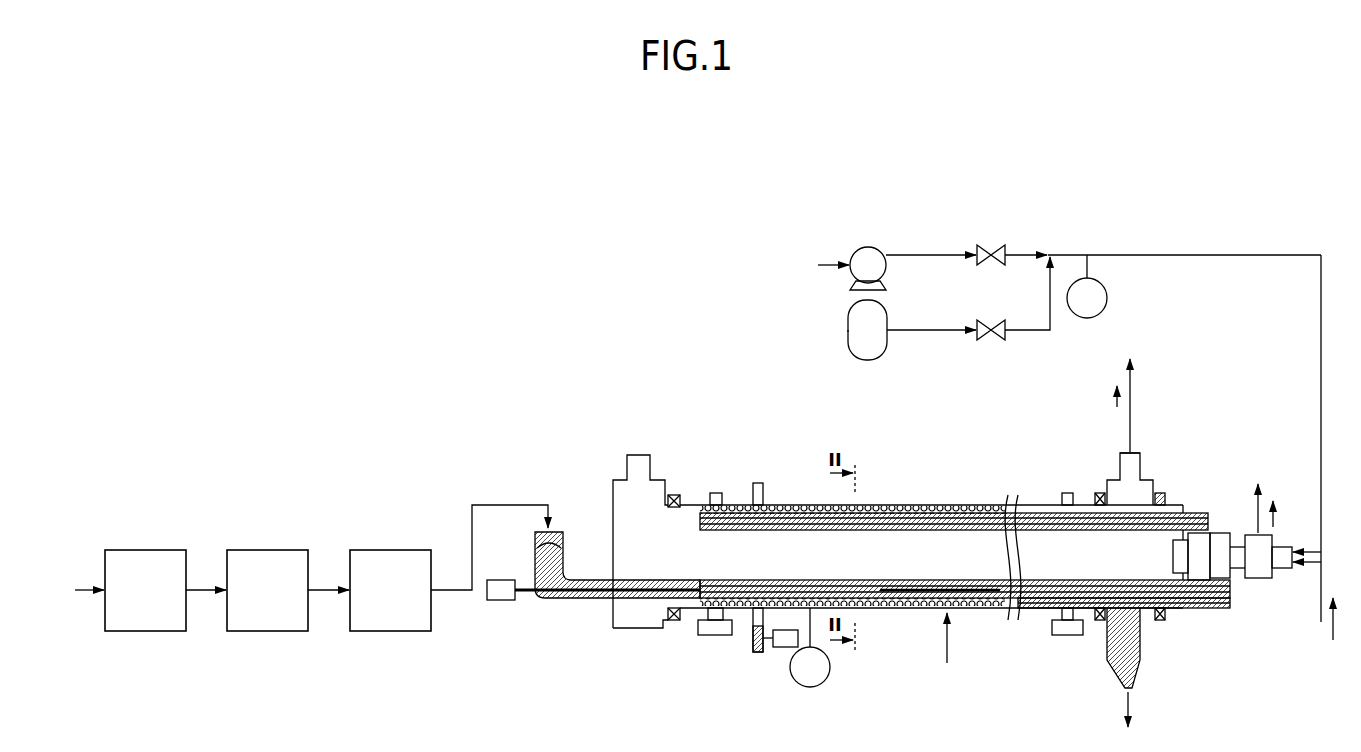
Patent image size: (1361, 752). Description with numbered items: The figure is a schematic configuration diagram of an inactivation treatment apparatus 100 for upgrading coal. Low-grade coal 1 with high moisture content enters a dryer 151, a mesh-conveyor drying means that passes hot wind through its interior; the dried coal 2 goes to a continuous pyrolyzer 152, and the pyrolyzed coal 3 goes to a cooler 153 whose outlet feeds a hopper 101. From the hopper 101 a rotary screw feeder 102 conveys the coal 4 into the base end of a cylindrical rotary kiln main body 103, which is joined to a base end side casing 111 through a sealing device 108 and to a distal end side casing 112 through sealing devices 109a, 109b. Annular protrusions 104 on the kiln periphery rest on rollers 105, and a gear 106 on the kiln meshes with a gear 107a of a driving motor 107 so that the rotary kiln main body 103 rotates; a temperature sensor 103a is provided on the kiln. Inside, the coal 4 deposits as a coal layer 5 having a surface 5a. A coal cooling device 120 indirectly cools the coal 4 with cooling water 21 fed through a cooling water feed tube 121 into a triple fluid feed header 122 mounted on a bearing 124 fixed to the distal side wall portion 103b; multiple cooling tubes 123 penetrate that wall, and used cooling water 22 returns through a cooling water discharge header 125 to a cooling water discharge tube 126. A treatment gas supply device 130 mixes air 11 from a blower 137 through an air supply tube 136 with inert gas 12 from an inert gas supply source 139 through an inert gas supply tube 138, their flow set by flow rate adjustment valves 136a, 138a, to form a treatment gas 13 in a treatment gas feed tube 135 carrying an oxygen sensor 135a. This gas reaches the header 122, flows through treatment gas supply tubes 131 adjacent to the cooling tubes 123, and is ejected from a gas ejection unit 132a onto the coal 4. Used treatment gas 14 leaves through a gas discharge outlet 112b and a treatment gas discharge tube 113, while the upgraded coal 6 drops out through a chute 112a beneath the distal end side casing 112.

The low-grade coal 1 is at (81, 590).
The dried coal 2 is at (220, 578).
The pyrolyzed coal 3 is at (344, 578).
The coal 4 is at (469, 578).
The coal layer 5 is at (948, 650).
The surface 5a is at (909, 578).
The upgraded coal 6 is at (1128, 722).
The air 11 is at (817, 265).
The inert gas 12 is at (848, 333).
The treatment gas 13 is at (1283, 240).
The used treatment gas 14 is at (1111, 397).
The cooling water 21 is at (1333, 641).
The used cooling water 22 is at (1278, 519).
The inactivation treatment apparatus 100 is at (666, 350).
The hopper 101 is at (538, 552).
The screw feeder 102 is at (546, 602).
The rotary kiln main body 103 is at (694, 618).
The temperature sensor 103a is at (810, 689).
The side wall portion 103b is at (1162, 620).
The annular protrusion 104 is at (718, 492).
The roller 105 is at (715, 636).
The gear 106 is at (765, 491).
The driving motor 107 is at (787, 650).
The gear 107a is at (759, 655).
The sealing device 108 is at (680, 494).
The sealing device 109a is at (1098, 493).
The sealing device 109b is at (1162, 493).
The base end side casing 111 is at (620, 475).
The distal end side casing 112 is at (1142, 465).
The chute 112a is at (1145, 661).
The gas discharge outlet 112b is at (1120, 448).
The treatment gas discharge tube 113 is at (1135, 395).
The coal cooling device 120 is at (1287, 484).
The cooling water feed tube 121 is at (1321, 604).
The triple fluid feed header 122 is at (1218, 533).
The cooling tube 123 is at (964, 514).
The bearing 124 is at (1190, 533).
The cooling water discharge header 125 is at (1263, 578).
The cooling water discharge tube 126 is at (1258, 483).
The treatment gas supply device 130 is at (1112, 205).
The treatment gas supply tube 131 is at (926, 513).
The gas ejection unit 132a is at (866, 507).
The treatment gas feed tube 135 is at (1180, 254).
The oxygen sensor 135a is at (1108, 298).
The air supply tube 136 is at (922, 255).
The flow rate adjustment valve 136a is at (983, 245).
The blower 137 is at (868, 247).
The inert gas supply tube 138 is at (922, 334).
The flow rate adjustment valve 138a is at (985, 342).
The inert gas supply source 139 is at (868, 362).
The dryer 151 is at (146, 632).
The pyrolyzer 152 is at (268, 632).
The cooler 153 is at (391, 632).